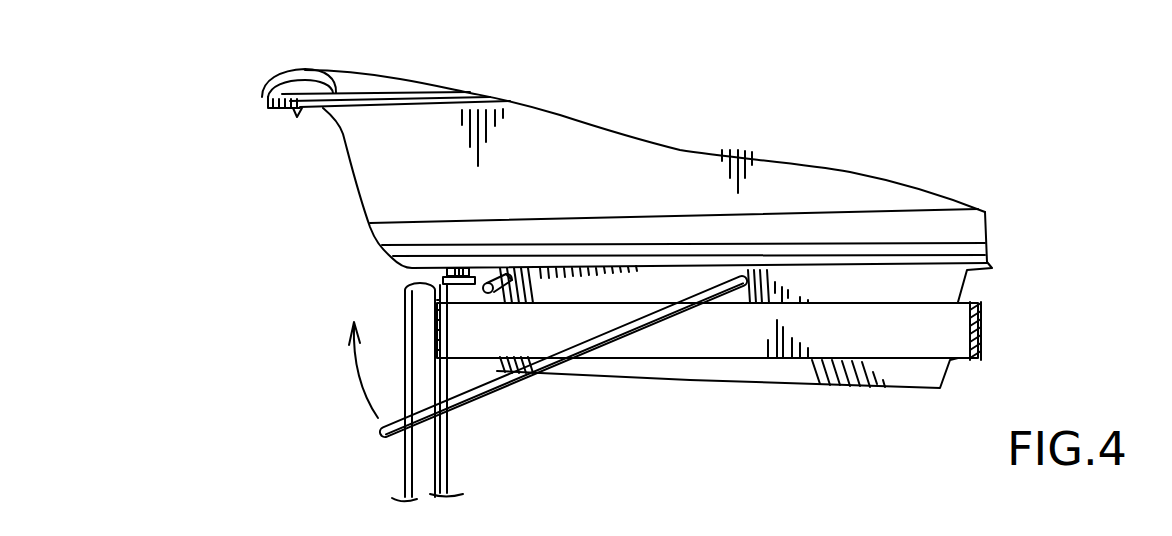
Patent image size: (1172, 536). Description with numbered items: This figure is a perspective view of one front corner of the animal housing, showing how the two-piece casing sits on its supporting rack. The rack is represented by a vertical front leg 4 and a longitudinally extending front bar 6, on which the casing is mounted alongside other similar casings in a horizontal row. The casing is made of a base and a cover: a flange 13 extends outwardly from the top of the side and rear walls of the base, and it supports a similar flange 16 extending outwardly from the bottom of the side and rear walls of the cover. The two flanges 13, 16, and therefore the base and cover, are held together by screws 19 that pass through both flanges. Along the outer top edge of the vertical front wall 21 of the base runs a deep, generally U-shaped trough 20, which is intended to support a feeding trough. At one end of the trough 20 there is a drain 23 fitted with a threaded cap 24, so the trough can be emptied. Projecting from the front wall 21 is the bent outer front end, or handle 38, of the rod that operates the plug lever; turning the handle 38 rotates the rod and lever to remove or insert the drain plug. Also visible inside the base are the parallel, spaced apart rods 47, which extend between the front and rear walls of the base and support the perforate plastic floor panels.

The front leg 4 is at (445, 475).
The front bar 6 is at (942, 332).
The flange 13 is at (277, 110).
The flange 16 is at (262, 98).
The screw 19 is at (297, 89).
The trough 20 is at (453, 171).
The front wall 21 is at (803, 378).
The drain 23 is at (463, 262).
The threaded cap 24 is at (460, 290).
The handle 38 is at (643, 318).
The rod 47 is at (507, 282).